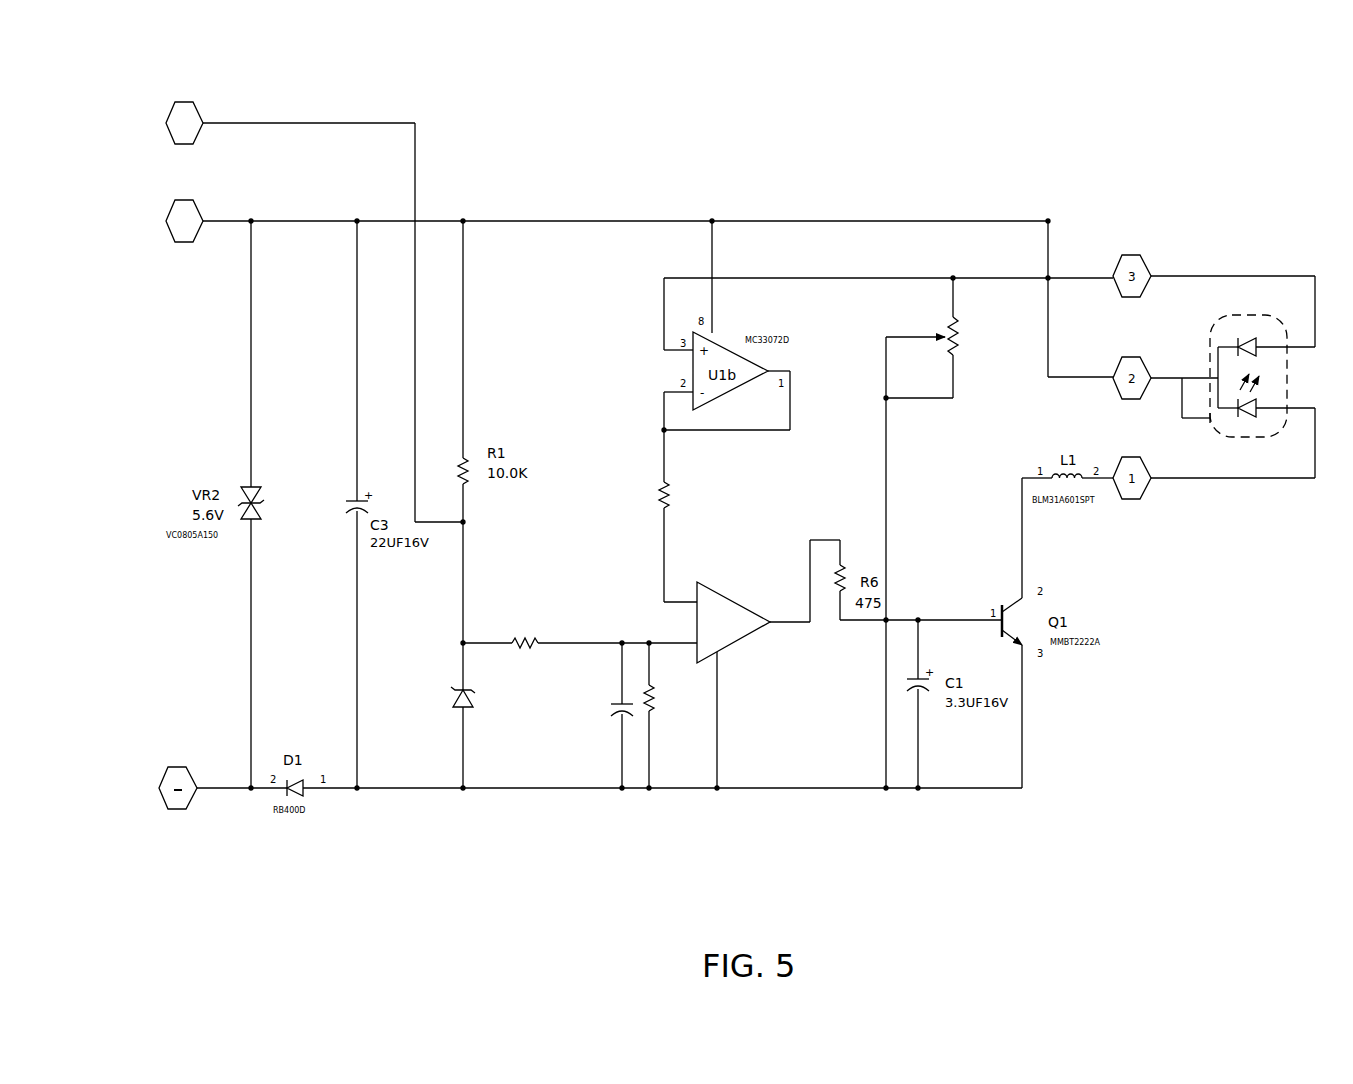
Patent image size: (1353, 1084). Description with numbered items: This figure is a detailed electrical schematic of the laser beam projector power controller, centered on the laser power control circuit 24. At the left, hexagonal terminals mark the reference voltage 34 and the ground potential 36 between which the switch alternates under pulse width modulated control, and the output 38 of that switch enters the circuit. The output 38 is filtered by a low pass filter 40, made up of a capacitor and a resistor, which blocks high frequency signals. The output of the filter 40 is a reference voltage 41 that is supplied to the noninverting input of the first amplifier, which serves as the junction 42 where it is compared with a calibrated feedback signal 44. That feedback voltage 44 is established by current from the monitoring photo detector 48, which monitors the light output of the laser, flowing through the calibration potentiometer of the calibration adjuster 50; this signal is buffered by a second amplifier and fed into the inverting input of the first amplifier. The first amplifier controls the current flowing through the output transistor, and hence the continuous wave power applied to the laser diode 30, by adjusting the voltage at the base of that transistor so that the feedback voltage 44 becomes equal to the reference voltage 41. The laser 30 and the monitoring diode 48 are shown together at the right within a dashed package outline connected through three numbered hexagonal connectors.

The laser power circuit 24 is at (667, 140).
The laser 30 is at (1240, 420).
The reference voltage 34 is at (183, 213).
The ground potential 36 is at (178, 777).
The output of switch 38 is at (185, 113).
The low pass filter 40 is at (549, 700).
The reference voltage 41 is at (665, 643).
The junction 42 is at (796, 708).
The calibrated feedback signal 44 is at (668, 540).
The photo detector 48 is at (1257, 338).
The calibration adjuster 50 is at (1003, 343).